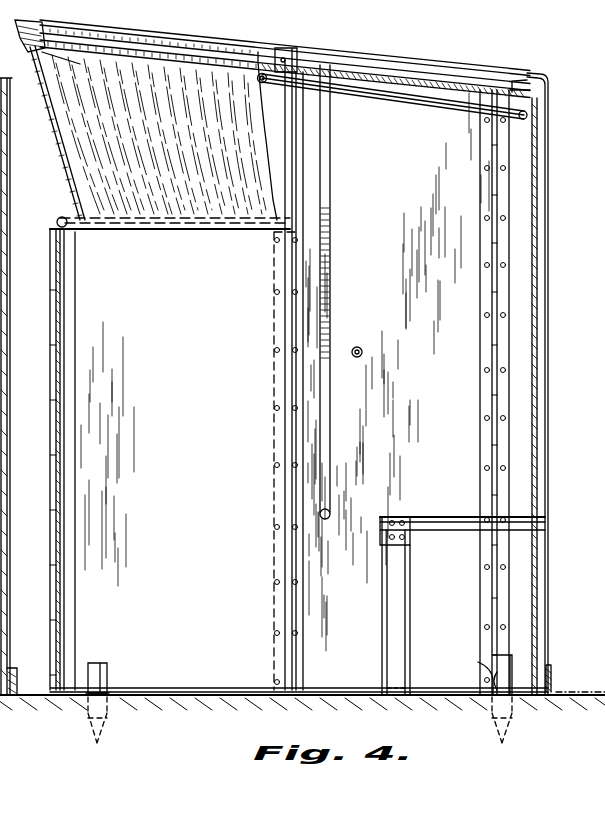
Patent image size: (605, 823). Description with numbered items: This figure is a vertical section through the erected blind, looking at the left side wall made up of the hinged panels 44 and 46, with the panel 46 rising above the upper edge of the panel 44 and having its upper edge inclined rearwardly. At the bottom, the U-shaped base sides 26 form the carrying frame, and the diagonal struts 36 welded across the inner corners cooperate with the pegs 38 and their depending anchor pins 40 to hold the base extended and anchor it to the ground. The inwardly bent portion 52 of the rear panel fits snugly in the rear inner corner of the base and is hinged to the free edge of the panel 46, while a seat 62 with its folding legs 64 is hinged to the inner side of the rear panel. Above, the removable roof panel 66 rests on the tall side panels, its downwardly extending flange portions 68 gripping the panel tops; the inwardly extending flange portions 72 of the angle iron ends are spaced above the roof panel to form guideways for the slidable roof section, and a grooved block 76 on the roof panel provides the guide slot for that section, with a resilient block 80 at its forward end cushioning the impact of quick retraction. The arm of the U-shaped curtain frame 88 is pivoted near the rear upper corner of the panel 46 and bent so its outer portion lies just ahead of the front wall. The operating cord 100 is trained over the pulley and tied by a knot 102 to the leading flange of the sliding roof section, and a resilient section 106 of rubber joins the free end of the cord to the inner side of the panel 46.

The sides 26 is at (553, 667).
The diagonal struts 36 is at (493, 670).
The pegs 38 is at (107, 670).
The anchor pins 40 is at (107, 686).
The panel 44 is at (299, 454).
The panel 46 is at (285, 372).
The inwardly bent portion 52 is at (517, 311).
The seats 62 is at (450, 505).
The legs 64 is at (398, 573).
The roof panel 66 is at (448, 85).
The flange portions 68 is at (455, 101).
The inwardly extending flange portions 72 is at (245, 28).
The block 76 is at (513, 85).
The resilient block 80 is at (283, 50).
The curtain frame 88 is at (447, 110).
The operating cords 100 is at (342, 118).
The knot 102 is at (27, 20).
The resilient section 106 is at (330, 323).